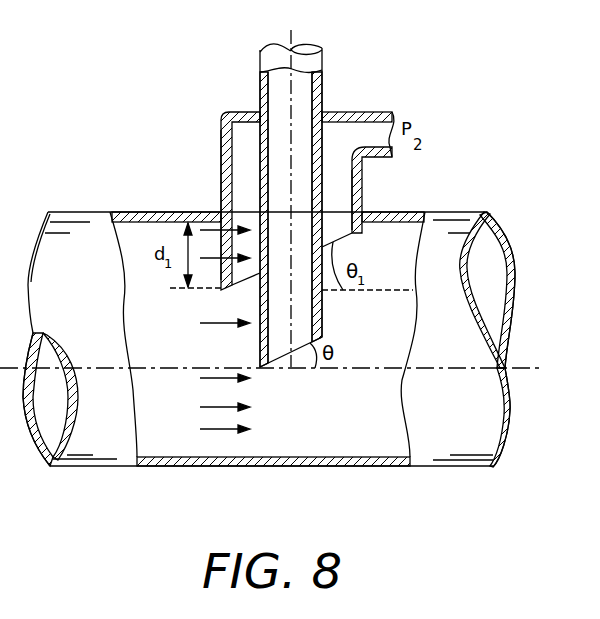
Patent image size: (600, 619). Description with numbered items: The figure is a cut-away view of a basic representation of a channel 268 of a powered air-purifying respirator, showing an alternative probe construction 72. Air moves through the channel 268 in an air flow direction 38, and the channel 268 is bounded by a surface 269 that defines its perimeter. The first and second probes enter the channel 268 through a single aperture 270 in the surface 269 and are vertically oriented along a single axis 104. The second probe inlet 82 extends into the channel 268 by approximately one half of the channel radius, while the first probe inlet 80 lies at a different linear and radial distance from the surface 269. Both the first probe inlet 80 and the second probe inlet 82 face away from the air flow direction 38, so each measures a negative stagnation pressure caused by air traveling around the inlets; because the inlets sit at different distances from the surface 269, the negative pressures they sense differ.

The air flow direction 38 is at (215, 430).
The probe construction 72 is at (367, 83).
The first probe inlet 80 is at (280, 373).
The second probe inlet 82 is at (350, 237).
The single axis 104 is at (292, 34).
The channel 268 is at (160, 290).
The surface 269 is at (142, 231).
The aperture 270 is at (213, 207).